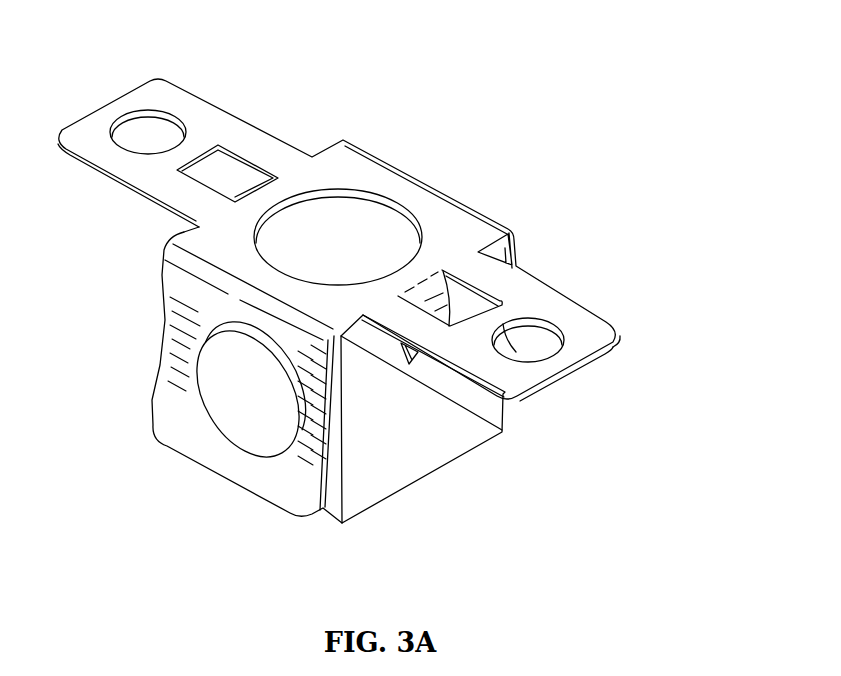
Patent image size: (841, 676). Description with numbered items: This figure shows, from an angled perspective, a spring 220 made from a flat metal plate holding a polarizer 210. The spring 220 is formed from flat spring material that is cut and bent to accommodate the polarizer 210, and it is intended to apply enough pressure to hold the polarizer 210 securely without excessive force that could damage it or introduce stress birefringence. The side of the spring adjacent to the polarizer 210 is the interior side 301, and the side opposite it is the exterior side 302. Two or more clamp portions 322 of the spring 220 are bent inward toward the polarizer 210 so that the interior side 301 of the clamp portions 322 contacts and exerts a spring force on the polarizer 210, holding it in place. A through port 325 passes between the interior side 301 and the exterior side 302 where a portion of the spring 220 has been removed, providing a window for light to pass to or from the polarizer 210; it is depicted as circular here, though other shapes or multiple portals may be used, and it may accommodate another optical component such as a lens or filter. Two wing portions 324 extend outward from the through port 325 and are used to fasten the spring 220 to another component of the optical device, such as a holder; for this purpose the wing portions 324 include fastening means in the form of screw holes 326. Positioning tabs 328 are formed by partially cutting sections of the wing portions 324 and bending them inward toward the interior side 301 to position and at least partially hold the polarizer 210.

The spring 220 is at (372, 273).
The exterior side 302 is at (210, 118).
The wing portions 324 is at (117, 172).
The screw holes 326 is at (149, 128).
The through port 325 is at (328, 232).
The interior side 301 is at (166, 214).
The clamp portions 322 is at (188, 440).
The positioning tabs 328 is at (408, 363).
The polarizer 210 is at (437, 460).